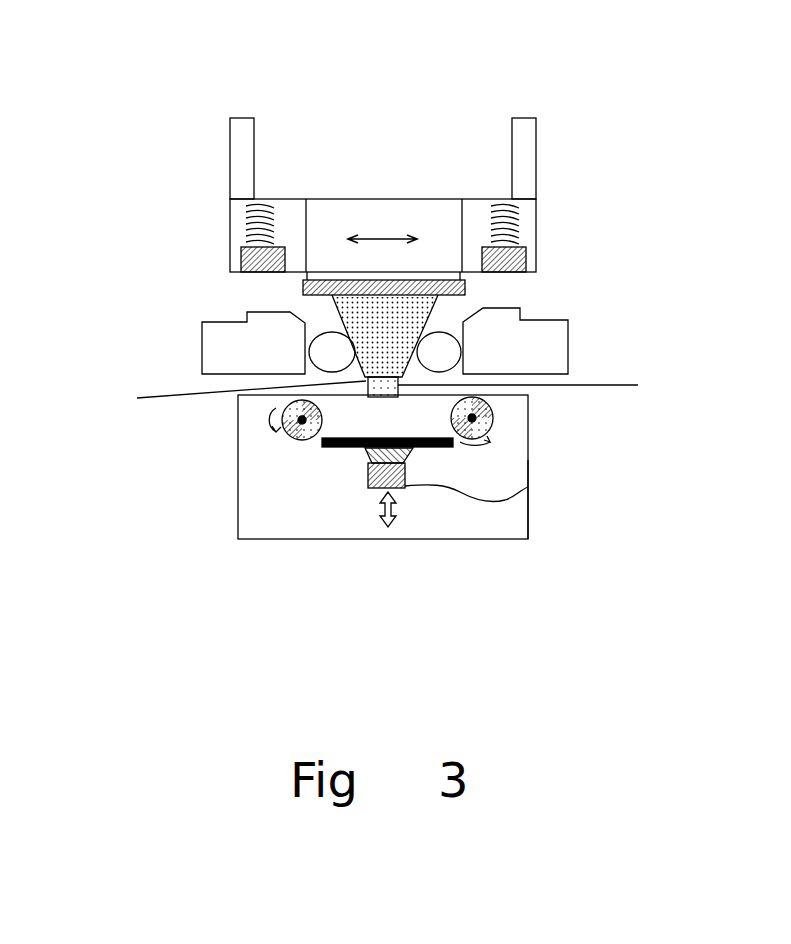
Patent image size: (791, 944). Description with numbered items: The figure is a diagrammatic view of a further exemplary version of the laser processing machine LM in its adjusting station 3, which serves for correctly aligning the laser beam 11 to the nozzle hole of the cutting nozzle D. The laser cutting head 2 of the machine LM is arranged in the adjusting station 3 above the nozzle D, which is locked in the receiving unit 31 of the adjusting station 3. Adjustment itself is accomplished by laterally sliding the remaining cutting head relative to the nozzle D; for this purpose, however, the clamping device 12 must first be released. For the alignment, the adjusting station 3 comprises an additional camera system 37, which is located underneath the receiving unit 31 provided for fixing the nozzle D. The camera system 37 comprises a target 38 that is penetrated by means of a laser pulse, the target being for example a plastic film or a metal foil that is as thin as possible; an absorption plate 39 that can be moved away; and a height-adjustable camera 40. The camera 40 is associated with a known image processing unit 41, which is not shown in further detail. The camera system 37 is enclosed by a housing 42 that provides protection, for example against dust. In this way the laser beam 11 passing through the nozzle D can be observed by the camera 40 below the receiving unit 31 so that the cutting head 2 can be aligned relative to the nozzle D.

The laser processing machine LM is at (588, 127).
The laser cutting head 2 is at (200, 162).
The clamping device 12 is at (564, 236).
The adjusting station 3 is at (609, 318).
The receiving unit 31 is at (211, 326).
The cutting nozzle D is at (234, 394).
The laser beam 11 is at (541, 390).
The camera system 37 is at (579, 568).
The target 38 is at (335, 398).
The absorption plate 39 is at (322, 447).
The height-adjustable camera 40 is at (368, 482).
The image processing unit 41 is at (520, 493).
The housing 42 is at (530, 525).